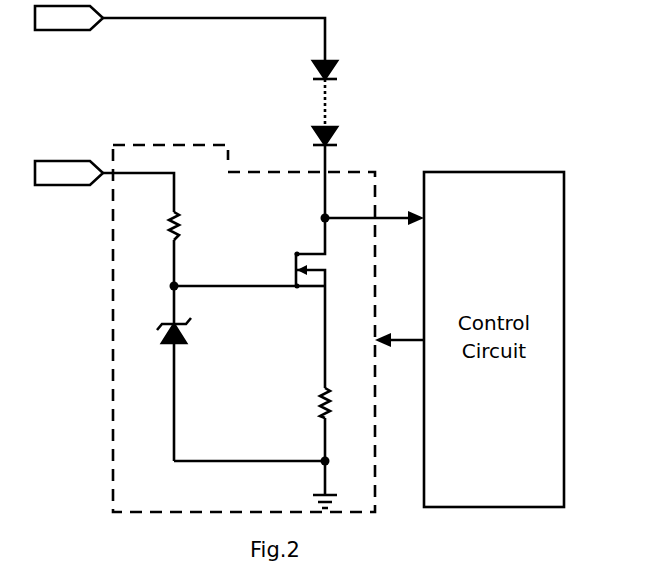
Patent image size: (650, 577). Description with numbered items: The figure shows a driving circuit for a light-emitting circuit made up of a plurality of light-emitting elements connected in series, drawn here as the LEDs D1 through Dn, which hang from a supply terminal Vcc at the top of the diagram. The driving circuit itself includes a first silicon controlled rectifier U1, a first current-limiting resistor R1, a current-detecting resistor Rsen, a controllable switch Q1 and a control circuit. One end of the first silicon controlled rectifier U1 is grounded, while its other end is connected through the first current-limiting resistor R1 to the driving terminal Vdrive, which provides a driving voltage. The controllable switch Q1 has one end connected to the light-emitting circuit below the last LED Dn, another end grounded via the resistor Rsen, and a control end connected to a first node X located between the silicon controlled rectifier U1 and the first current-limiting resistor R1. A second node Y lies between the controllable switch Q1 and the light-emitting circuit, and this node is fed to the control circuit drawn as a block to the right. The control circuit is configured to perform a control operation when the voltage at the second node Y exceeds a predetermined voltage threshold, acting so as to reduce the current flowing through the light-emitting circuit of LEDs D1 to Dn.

The supply voltage terminal Vcc is at (180, 36).
The driving terminal Vdrive is at (104, 192).
The LED D1 is at (307, 93).
The LED Dn is at (307, 172).
The first current-limiting resistor R1 is at (193, 249).
The first node X is at (211, 289).
The second node Y is at (373, 209).
The first silicon controlled rectifier U1 is at (157, 373).
The controllable switch Q1 is at (331, 303).
The resistor Rsen is at (297, 441).